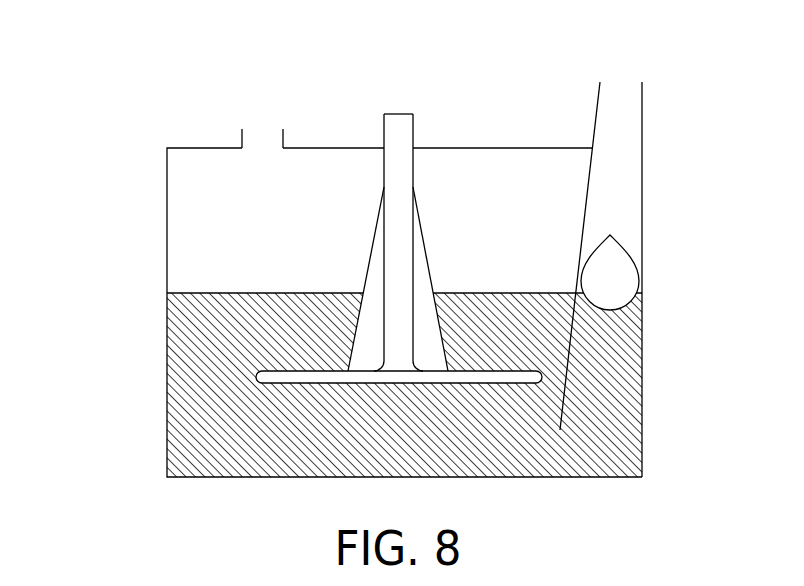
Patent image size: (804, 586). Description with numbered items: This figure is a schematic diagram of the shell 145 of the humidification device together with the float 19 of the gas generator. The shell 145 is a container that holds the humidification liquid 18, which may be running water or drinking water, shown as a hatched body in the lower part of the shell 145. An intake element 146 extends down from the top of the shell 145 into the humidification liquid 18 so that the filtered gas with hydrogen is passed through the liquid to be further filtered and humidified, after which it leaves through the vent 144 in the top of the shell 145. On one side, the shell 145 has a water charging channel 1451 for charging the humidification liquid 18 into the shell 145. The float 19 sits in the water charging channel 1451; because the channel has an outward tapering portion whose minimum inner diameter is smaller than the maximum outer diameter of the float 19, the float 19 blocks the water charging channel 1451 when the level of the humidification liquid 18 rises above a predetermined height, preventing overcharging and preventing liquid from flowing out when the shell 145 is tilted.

The humidification liquid 18 is at (177, 407).
The float 19 is at (612, 280).
The vent 144 is at (258, 138).
The shell 145 is at (167, 245).
The intake element 146 is at (410, 132).
The water charging channel 1451 is at (622, 153).